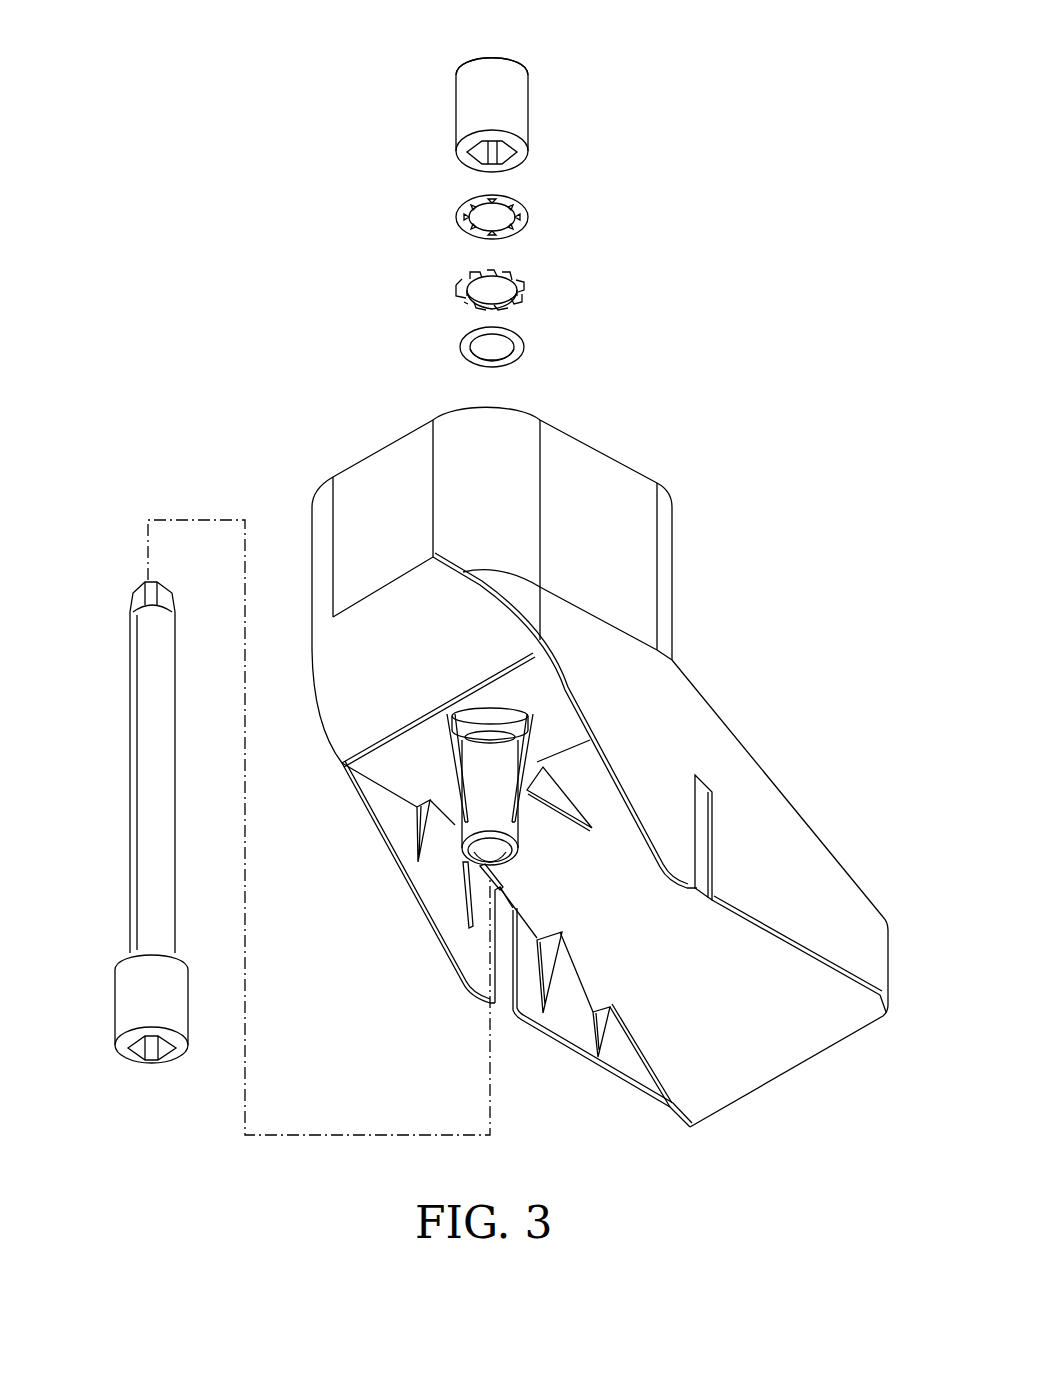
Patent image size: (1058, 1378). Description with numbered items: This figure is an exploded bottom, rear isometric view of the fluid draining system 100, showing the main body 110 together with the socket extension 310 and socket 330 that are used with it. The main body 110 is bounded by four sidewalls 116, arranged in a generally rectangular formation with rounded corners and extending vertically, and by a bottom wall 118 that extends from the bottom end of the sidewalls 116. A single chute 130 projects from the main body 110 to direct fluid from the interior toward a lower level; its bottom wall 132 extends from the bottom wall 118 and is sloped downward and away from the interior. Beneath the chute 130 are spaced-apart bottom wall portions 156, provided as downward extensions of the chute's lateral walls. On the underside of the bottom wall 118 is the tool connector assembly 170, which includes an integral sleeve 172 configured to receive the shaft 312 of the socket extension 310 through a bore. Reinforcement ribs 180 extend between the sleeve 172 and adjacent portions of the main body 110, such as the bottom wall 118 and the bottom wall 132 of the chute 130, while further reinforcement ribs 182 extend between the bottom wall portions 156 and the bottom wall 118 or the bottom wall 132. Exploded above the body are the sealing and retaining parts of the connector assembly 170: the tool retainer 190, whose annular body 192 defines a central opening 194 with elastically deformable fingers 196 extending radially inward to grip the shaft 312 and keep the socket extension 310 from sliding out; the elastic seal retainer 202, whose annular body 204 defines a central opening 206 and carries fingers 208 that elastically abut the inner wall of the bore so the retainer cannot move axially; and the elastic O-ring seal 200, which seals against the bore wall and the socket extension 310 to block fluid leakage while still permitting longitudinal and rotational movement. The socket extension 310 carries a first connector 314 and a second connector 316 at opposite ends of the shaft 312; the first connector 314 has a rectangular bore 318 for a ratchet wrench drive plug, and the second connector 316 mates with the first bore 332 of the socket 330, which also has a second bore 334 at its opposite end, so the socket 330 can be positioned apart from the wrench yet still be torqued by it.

The fluid draining system 100 is at (603, 776).
The main body 110 is at (603, 776).
The sidewalls 116 is at (633, 578).
The bottom wall 118 is at (373, 768).
The chute 130 is at (717, 902).
The bottom wall of the chute 132 is at (762, 1066).
The bottom wall portions 156 is at (630, 1088).
The tool connector assembly 170 is at (432, 777).
The sleeve 172 is at (462, 832).
The reinforcement ribs 180 is at (535, 720).
The reinforcement ribs 182 is at (548, 992).
The tool retainer 190 is at (509, 217).
The annular body 192 is at (522, 215).
The central opening 194 is at (485, 225).
The fingers 196 is at (505, 240).
The elastic seal 200 is at (532, 349).
The elastic seal retainer 202 is at (505, 304).
The annular body 204 is at (520, 300).
The central opening 206 is at (490, 298).
The fingers 208 is at (460, 283).
The socket extension 310 is at (102, 840).
The shaft 312 is at (145, 825).
The first connector 314 is at (115, 1005).
The second connector 316 is at (132, 597).
The rectangular socket or bore 318 is at (135, 1060).
The socket 330 is at (503, 109).
The first bore 332 is at (480, 160).
The second bore 334 is at (468, 55).